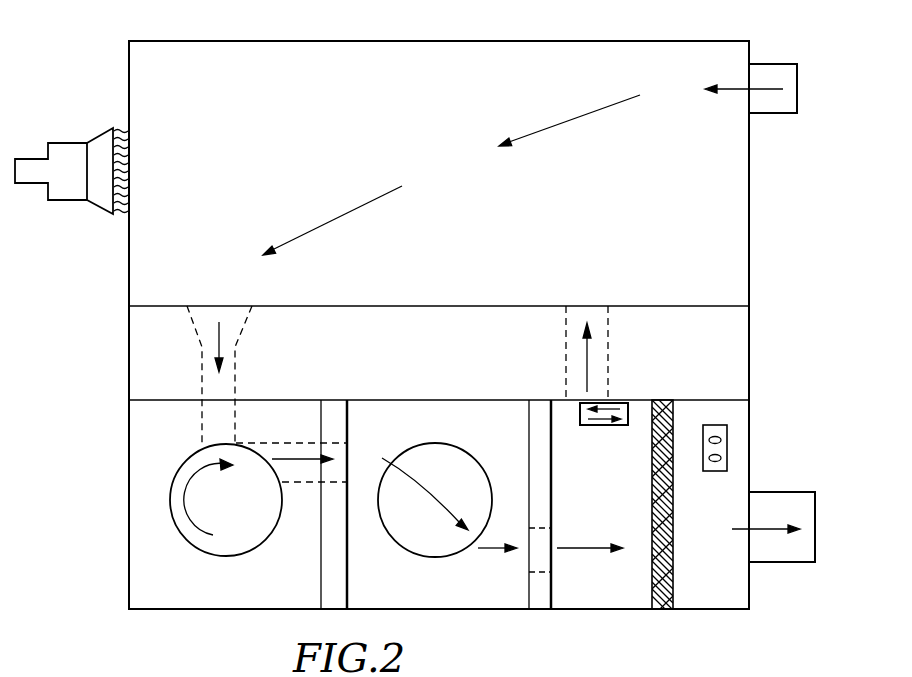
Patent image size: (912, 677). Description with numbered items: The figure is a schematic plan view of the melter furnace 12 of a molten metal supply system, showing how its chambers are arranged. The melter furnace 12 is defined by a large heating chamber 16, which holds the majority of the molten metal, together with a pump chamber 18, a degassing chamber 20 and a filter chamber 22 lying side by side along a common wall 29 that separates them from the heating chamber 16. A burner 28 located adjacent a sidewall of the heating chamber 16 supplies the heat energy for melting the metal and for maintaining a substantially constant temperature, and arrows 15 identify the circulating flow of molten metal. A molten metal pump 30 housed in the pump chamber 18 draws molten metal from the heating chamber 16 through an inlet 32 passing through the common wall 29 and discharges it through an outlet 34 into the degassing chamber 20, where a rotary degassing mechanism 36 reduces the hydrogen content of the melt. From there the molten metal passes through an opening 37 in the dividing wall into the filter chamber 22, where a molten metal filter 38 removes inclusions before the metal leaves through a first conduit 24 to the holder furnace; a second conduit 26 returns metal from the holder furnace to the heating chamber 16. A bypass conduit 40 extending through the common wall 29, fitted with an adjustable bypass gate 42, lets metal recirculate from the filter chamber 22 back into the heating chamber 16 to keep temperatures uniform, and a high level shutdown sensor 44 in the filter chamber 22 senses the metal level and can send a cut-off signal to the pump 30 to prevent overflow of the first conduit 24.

The melter furnace 12 is at (118, 80).
The arrows 15 is at (580, 117).
The heating chamber 16 is at (352, 156).
The pump chamber 18 is at (128, 462).
The degassing chamber 20 is at (489, 610).
The filter chamber 22 is at (613, 611).
The first conduit 24 is at (778, 563).
The second conduit 26 is at (798, 92).
The burner 28 is at (63, 201).
The common wall 29 is at (421, 367).
The molten metal pump 30 is at (237, 516).
The inlet 32 is at (207, 311).
The outlet 34 is at (307, 485).
The degassing mechanism 36 is at (425, 521).
The opening 37 is at (540, 572).
The molten metal filter 38 is at (660, 610).
The bypass conduit 40 is at (570, 358).
The adjustable bypass gate 42 is at (582, 425).
The high level shutdown sensor 44 is at (727, 452).